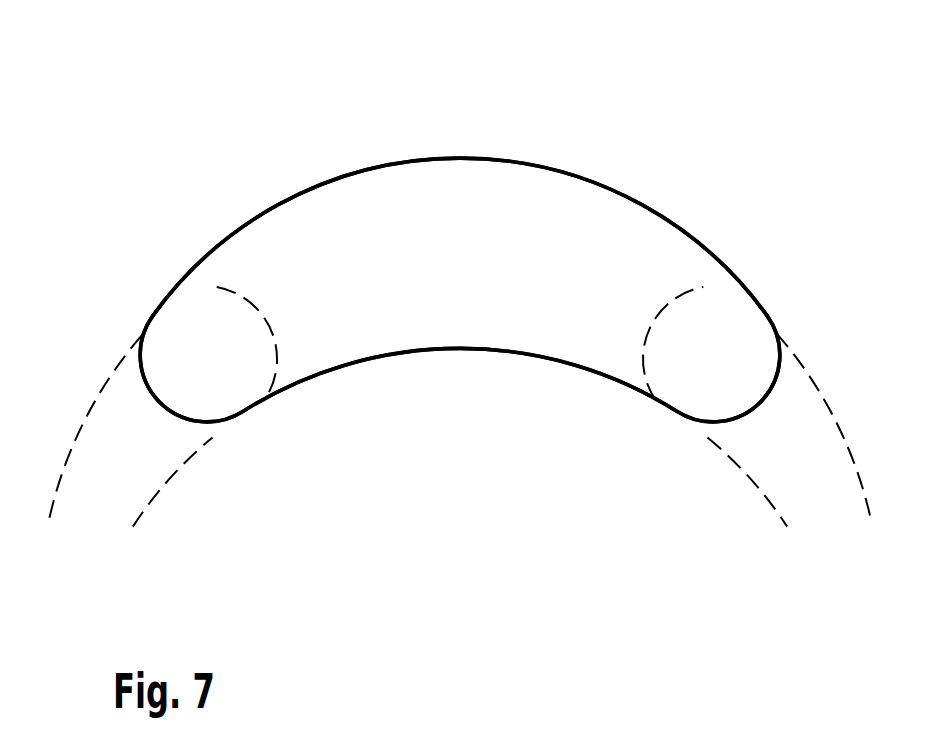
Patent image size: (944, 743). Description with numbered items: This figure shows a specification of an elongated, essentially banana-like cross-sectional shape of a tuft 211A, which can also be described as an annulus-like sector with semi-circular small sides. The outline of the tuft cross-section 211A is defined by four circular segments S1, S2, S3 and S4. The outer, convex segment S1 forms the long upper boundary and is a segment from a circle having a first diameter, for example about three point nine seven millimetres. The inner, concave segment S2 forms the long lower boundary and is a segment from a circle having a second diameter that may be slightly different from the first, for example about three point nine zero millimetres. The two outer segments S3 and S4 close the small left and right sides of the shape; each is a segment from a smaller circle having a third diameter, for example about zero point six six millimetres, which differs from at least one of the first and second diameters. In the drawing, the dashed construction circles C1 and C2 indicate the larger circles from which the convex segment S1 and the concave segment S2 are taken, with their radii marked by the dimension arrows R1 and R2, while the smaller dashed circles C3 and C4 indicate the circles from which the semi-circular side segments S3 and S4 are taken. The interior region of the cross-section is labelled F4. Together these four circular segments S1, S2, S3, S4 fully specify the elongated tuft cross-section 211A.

The cross-section profile of element 211A is at (502, 159).
The outer convex segment S1 is at (338, 177).
The inner concave segment S2 is at (407, 353).
The outer segment S3 is at (150, 391).
The outer segment S4 is at (770, 391).
The fourth face / surface region F4 is at (600, 238).
The first circle (outer reference circle) C1 is at (855, 458).
The second circle (inner reference circle) C2 is at (750, 480).
The third circle (left end circle) C3 is at (277, 363).
The fourth circle (right end circle) C4 is at (643, 363).
The radius of first circle R1 is at (76, 455).
The radius of second circle R2 is at (199, 451).